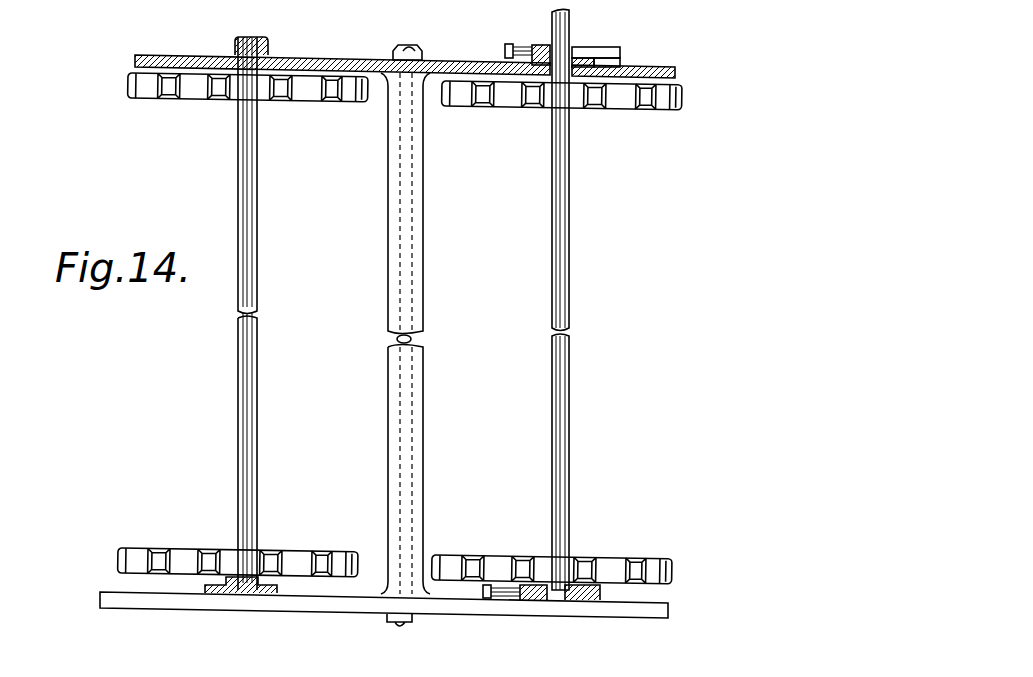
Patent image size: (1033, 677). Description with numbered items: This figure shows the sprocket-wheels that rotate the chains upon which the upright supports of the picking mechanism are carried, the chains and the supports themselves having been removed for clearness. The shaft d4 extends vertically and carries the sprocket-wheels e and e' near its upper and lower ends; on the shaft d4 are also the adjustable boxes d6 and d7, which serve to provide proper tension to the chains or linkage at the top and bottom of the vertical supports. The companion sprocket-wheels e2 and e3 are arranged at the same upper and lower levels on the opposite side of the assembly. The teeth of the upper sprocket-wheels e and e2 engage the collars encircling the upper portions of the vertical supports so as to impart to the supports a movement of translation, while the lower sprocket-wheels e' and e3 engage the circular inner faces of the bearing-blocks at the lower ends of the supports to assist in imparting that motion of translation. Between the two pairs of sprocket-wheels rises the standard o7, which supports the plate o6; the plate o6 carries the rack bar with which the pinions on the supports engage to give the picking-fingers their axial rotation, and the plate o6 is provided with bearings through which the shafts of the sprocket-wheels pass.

The plate o6 is at (345, 62).
The standard o7 is at (418, 378).
The shaft d4 is at (570, 288).
The adjustable box d6 is at (583, 55).
The adjustable box d7 is at (575, 600).
The sprocket-wheel e is at (577, 94).
The sprocket-wheel e2 is at (130, 92).
The sprocket-wheel e3 is at (118, 560).
The sprocket-wheel e' is at (571, 572).